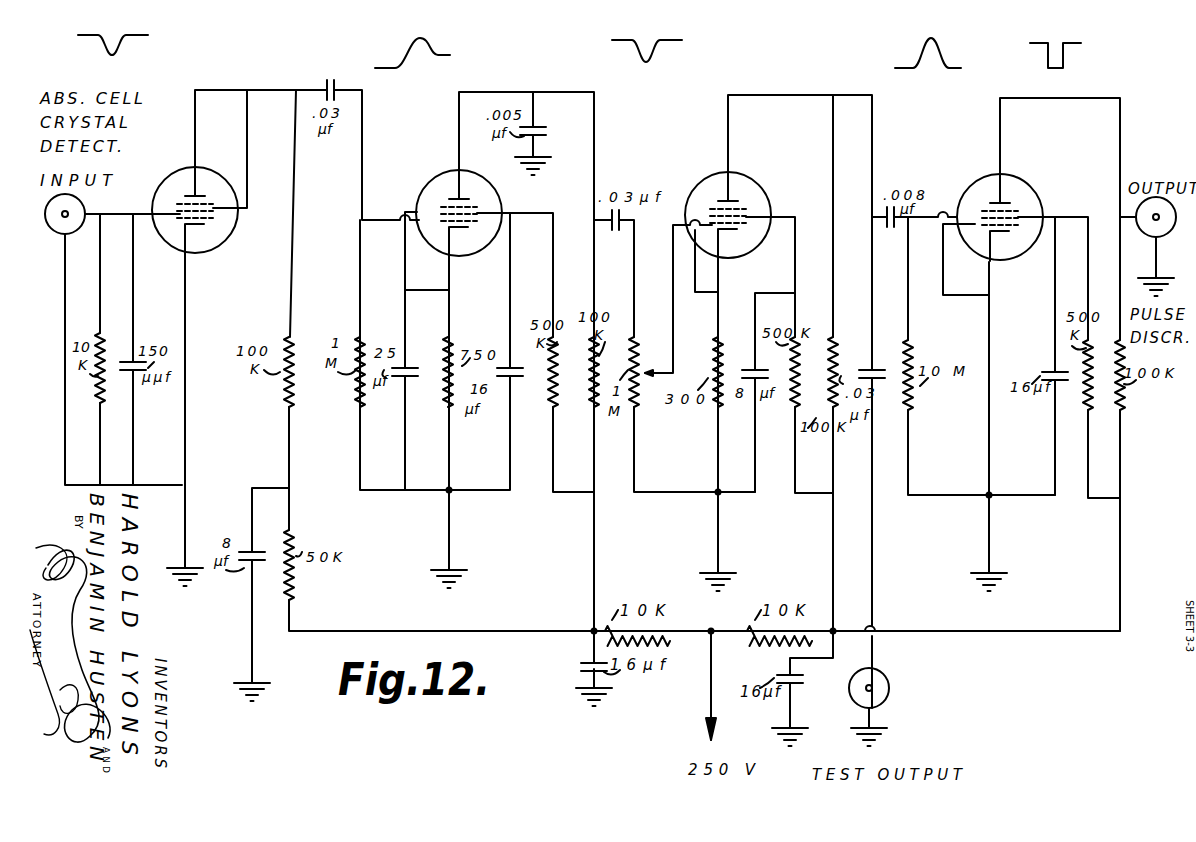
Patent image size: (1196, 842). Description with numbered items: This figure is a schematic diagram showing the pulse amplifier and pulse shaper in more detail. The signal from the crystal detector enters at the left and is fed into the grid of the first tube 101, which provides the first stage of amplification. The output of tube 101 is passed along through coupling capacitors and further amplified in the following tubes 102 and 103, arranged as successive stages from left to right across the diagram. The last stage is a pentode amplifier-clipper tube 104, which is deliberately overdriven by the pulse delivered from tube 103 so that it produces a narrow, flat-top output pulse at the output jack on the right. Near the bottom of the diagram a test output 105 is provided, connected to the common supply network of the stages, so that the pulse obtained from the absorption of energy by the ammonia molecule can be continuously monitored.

The tube 101 is at (158, 180).
The tube 102 is at (428, 182).
The tube 103 is at (692, 184).
The pentode amplifier-clipper tube 104 is at (964, 184).
The test output 105 is at (891, 688).